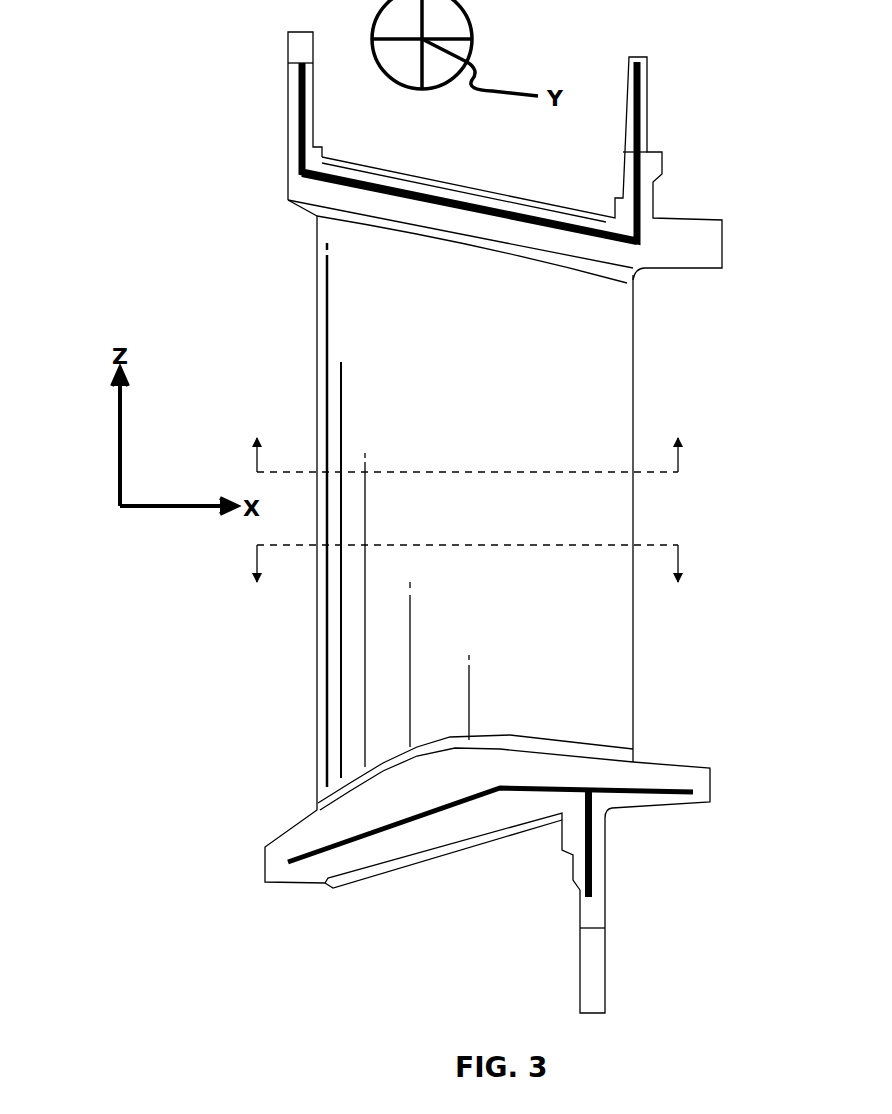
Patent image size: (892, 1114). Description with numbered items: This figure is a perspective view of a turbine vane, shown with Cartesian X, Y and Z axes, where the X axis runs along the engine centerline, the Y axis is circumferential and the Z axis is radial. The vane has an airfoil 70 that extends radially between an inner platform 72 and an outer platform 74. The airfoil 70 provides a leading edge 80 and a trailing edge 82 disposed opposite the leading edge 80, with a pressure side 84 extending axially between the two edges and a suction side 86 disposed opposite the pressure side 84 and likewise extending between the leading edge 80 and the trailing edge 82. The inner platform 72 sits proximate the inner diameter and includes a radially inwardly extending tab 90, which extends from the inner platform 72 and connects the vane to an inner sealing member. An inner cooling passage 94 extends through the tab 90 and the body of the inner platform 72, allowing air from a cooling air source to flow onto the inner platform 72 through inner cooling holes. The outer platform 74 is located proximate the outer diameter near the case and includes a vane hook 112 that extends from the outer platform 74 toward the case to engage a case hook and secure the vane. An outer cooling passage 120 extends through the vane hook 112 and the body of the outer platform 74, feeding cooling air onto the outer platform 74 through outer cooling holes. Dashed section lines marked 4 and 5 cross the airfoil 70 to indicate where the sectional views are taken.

The airfoil 70 is at (488, 509).
The inner platform 72 is at (694, 814).
The outer platform 74 is at (676, 190).
The leading edge 80 is at (316, 275).
The trailing edge 82 is at (634, 320).
The pressure side 84 is at (585, 385).
The suction side 86 is at (598, 686).
The radially inwardly extending tab 90 is at (590, 903).
The inner cooling passage 94 is at (540, 795).
The vane hook 112 is at (296, 46).
The outer cooling passage 120 is at (498, 208).
The section line 4- 4 is at (468, 584).
The section line 5- 5 is at (468, 437).